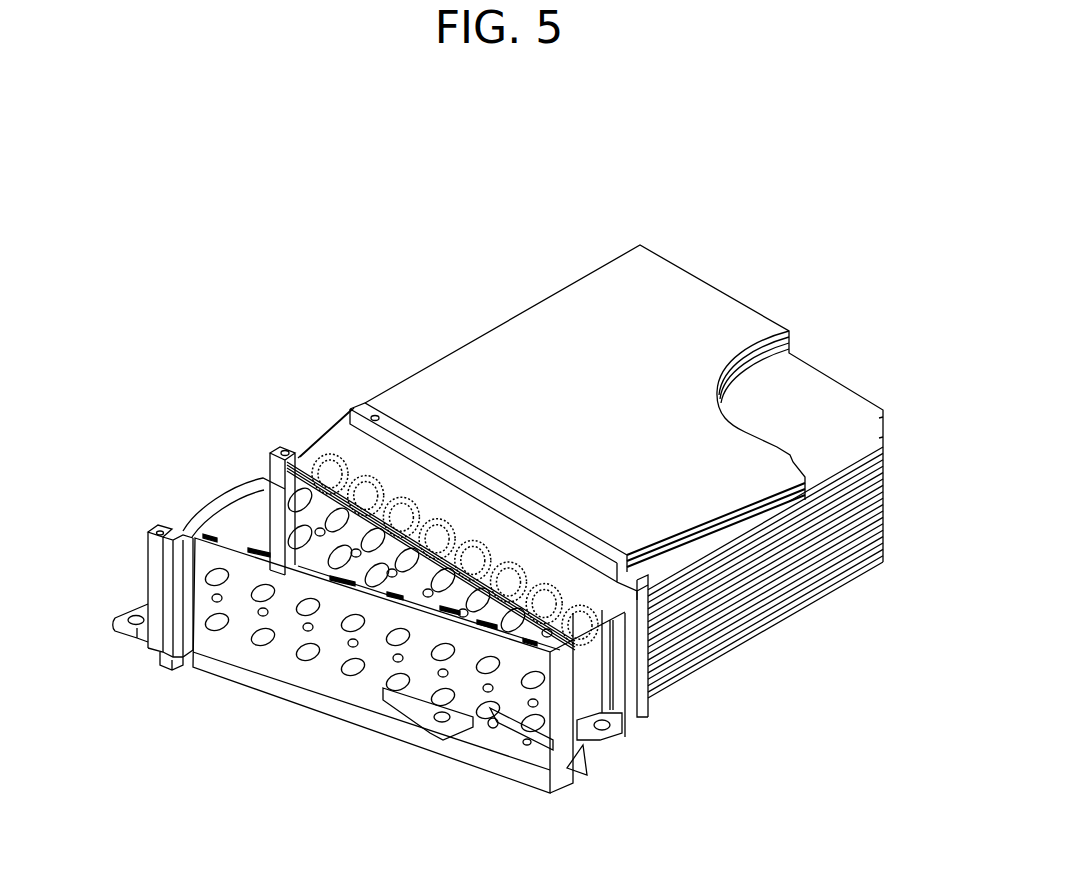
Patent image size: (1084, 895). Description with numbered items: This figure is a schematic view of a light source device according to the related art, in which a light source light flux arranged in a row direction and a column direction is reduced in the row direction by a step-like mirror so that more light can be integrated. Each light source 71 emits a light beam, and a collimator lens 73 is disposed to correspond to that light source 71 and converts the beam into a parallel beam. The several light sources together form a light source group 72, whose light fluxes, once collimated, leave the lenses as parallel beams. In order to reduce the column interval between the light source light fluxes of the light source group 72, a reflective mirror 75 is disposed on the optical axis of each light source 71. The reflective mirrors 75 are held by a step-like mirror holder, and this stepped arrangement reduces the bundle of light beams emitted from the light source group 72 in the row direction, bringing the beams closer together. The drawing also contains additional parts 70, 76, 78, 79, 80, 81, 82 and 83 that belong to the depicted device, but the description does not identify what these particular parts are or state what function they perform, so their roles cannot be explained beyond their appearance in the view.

The heat exchanger 70 is at (244, 218).
The light source 71 is at (373, 477).
The light source group 72 is at (418, 493).
The collimator lens 73 is at (282, 447).
The reflective mirror 75 is at (183, 531).
The front perforated plate 76 is at (242, 622).
The curved guide 78 is at (228, 500).
The seal bar 79 is at (312, 462).
The header top surface 80 is at (348, 442).
The top plate 81 is at (558, 290).
The top rail 82 is at (362, 403).
The laminated fin stack 83 is at (817, 412).